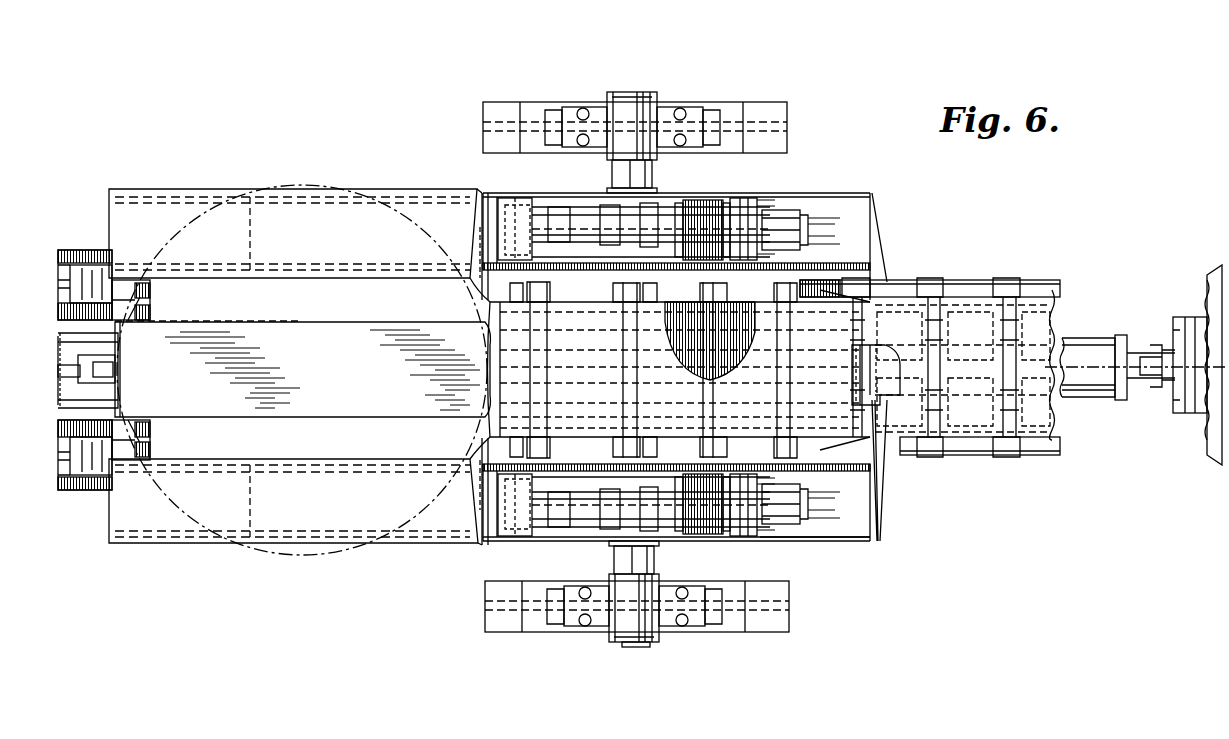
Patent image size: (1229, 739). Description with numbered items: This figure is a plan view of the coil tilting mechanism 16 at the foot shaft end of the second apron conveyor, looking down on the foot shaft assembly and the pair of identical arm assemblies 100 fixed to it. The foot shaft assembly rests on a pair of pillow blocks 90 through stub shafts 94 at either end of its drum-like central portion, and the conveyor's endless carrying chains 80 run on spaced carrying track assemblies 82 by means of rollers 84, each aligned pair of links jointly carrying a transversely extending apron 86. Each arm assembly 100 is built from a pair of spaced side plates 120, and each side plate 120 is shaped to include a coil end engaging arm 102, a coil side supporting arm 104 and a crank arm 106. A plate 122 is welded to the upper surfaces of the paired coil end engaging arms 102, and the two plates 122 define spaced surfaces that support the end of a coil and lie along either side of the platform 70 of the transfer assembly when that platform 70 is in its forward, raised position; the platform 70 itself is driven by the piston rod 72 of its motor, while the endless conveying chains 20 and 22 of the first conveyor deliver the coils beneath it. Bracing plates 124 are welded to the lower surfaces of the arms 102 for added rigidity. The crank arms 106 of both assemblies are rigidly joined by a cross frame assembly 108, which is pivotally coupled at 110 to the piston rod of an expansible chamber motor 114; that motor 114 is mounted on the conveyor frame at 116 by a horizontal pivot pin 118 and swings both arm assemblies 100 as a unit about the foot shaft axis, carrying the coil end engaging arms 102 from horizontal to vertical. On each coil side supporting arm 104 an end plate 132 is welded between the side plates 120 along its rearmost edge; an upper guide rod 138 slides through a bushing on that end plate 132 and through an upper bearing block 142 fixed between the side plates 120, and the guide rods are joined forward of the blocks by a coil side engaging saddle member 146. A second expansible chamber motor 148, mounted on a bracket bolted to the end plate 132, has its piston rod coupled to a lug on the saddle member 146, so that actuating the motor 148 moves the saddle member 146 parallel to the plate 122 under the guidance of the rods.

The tilting mechanism 16 is at (806, 547).
The endless conveying chain 20 is at (78, 262).
The endless conveying chain 22 is at (89, 496).
The platform 70 is at (311, 380).
The piston rod 72 is at (70, 360).
The endless carrying chain 80 is at (970, 300).
The carrying track assembly 82 is at (1040, 280).
The roller 84 is at (915, 281).
The apron 86 is at (918, 441).
The pillow block 90 is at (590, 105).
The stub shaft 94 is at (612, 174).
The arm assembly 100 is at (470, 187).
The coil end engaging arm 102 is at (275, 189).
The coil side supporting arm 104 is at (550, 201).
The crank arm 106 is at (832, 193).
The cross frame assembly 108 is at (883, 460).
The pivotal coupling 110 is at (868, 403).
The expansible chamber motor 114 is at (1098, 400).
The motor mounting on conveyor frame 116 is at (1192, 414).
The pivot pin 118 is at (1160, 400).
The side plate 120 is at (168, 203).
The plate 122 is at (164, 194).
The bracing plate 124 is at (250, 238).
The end plate 132 is at (750, 208).
The upper guide rod 138 is at (798, 230).
The upper bearing block 142 is at (503, 203).
The coil side engaging saddle member 146 is at (472, 258).
The expansible chamber motor 148 is at (668, 208).